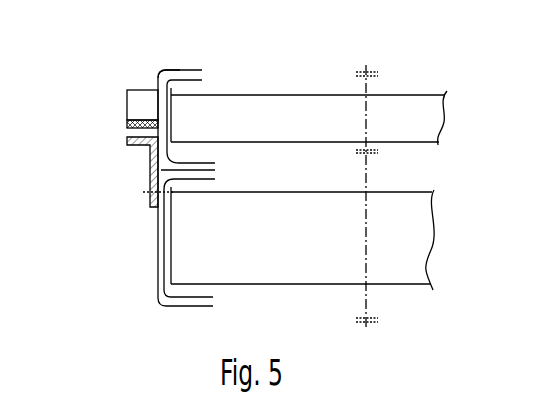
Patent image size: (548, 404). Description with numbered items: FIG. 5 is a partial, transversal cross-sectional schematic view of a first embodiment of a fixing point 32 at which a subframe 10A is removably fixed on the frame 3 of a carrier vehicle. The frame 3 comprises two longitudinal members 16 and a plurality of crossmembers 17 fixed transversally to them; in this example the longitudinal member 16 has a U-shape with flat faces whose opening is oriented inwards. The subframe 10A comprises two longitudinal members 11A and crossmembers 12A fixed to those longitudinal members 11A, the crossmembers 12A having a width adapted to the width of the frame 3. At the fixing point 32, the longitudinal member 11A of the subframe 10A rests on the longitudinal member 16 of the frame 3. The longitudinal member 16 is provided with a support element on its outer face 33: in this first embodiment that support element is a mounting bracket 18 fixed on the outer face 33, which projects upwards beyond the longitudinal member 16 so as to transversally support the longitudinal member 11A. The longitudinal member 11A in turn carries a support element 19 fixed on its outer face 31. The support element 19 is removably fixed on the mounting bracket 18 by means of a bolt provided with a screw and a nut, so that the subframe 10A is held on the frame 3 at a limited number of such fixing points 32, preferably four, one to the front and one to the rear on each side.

The frame 3 is at (132, 267).
The subframe 10A is at (129, 109).
The longitudinal member 11A is at (182, 70).
The crossmember 12A is at (265, 95).
The longitudinal member 16 is at (168, 307).
The crossmember 17 is at (398, 286).
The mounting bracket 18 is at (149, 174).
The support element 19 is at (126, 118).
The outer face 31 is at (151, 60).
The fixing point 32 is at (96, 133).
The outer face 33 is at (140, 219).